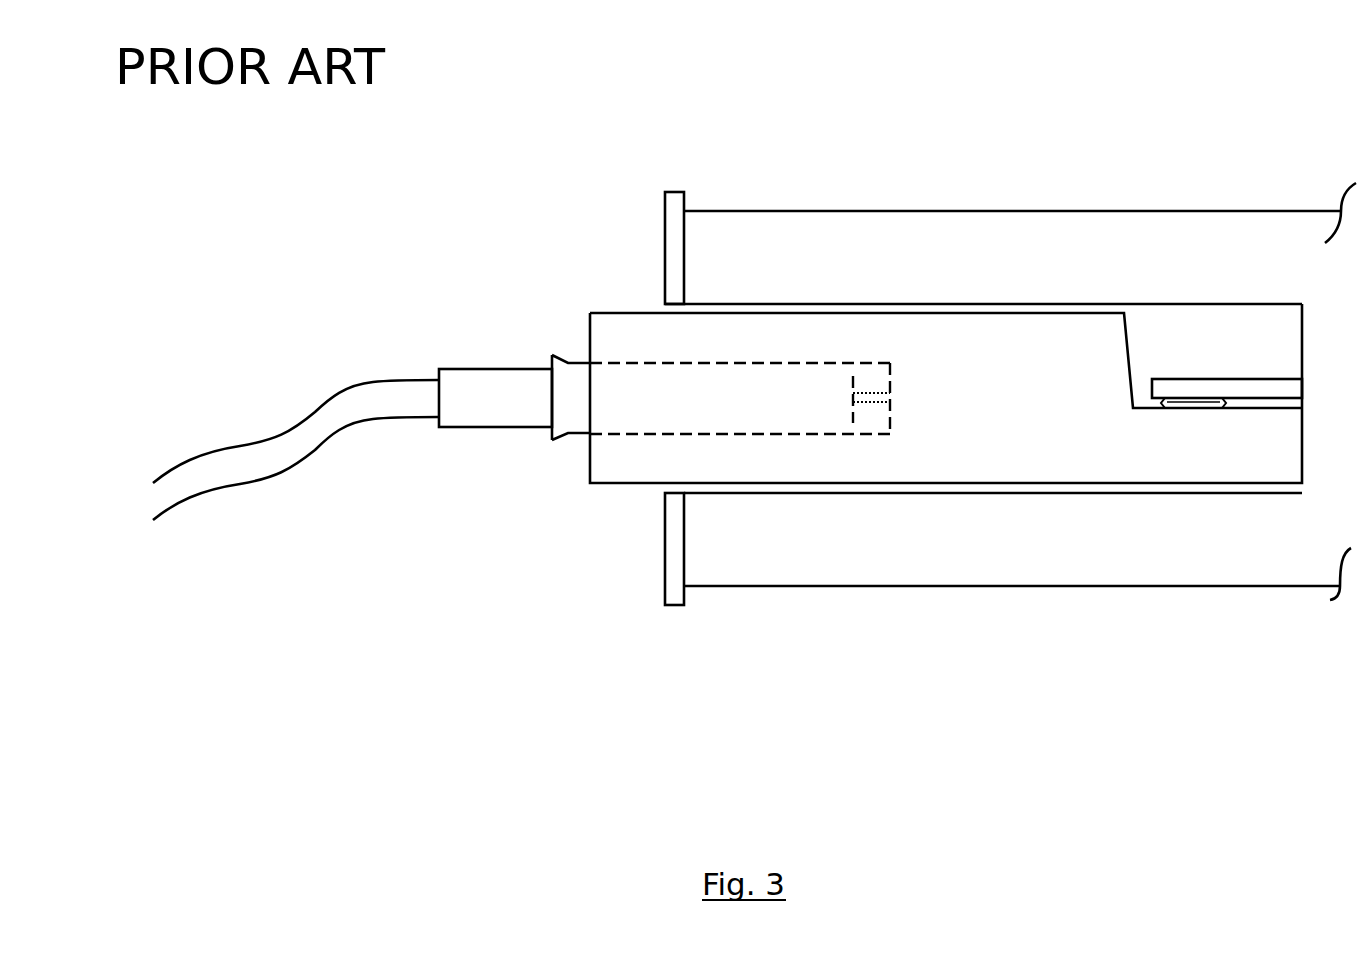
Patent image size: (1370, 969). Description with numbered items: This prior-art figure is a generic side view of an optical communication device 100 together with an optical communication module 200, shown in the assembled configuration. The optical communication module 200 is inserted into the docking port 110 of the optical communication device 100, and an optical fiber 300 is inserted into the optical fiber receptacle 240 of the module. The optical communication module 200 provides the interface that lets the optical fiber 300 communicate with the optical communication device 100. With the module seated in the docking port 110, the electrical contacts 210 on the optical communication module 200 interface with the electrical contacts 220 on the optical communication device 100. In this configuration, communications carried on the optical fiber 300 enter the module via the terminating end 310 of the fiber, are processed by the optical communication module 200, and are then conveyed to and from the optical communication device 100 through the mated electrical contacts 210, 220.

The optical communication device 100 is at (962, 158).
The docking port 110 is at (785, 304).
The optical communication module 200 is at (623, 313).
The electrical contacts 210 is at (1193, 408).
The electrical contacts 220 is at (1185, 396).
The optical fiber receptacle 240 is at (622, 361).
The optical fiber 300 is at (268, 397).
The terminating end 310 is at (493, 427).